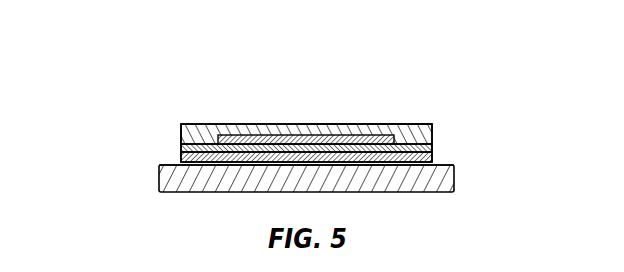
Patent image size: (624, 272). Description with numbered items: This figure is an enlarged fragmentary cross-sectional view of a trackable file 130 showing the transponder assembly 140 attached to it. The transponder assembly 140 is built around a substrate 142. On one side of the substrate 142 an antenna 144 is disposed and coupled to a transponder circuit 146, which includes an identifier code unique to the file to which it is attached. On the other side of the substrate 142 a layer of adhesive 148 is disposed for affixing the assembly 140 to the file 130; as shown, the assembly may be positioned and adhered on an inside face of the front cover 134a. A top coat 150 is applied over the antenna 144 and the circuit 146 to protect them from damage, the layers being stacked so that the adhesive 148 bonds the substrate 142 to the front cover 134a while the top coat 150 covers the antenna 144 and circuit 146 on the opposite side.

The file 130 is at (151, 199).
The front cover 134a is at (456, 177).
The transponder assembly 140 is at (463, 73).
The substrate 142 is at (433, 147).
The antenna 144 is at (253, 125).
The transponder circuit 146 is at (353, 125).
The layer of adhesive 148 is at (180, 159).
The top coat 150 is at (199, 124).